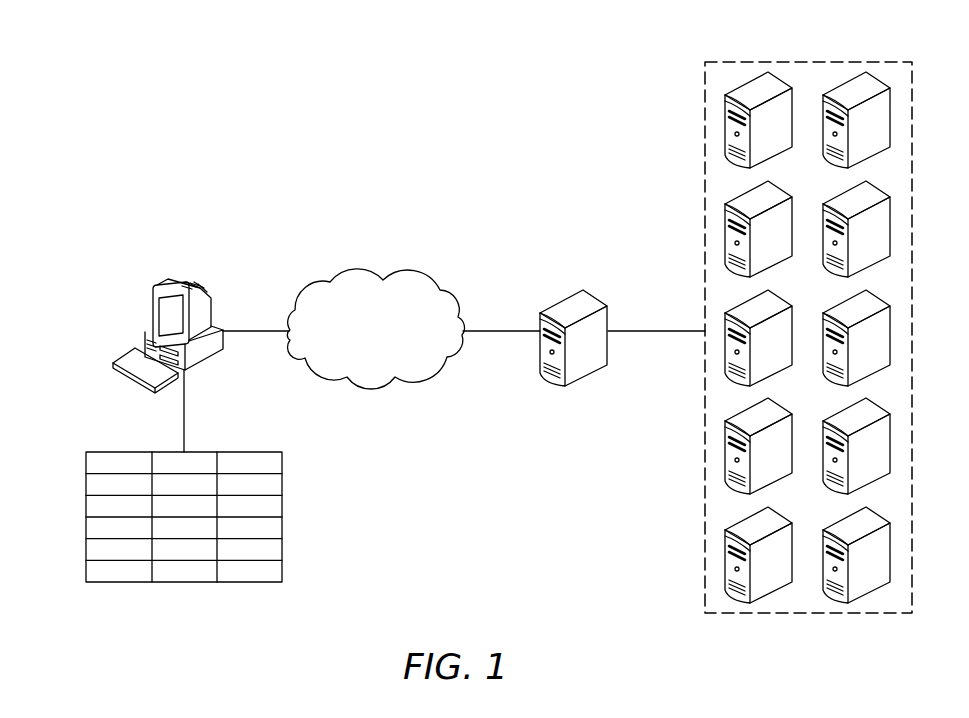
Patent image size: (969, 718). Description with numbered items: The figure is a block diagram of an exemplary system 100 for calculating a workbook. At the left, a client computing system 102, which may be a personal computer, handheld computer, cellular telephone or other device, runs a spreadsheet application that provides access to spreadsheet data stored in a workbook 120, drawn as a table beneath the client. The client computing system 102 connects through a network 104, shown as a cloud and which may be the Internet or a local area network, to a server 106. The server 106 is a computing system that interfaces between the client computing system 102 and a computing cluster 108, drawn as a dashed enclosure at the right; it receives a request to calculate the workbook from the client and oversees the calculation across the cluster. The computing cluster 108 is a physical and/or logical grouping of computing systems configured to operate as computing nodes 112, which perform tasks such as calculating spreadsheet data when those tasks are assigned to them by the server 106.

The system 100 is at (60, 92).
The client computing system 102 is at (153, 303).
The network 104 is at (332, 280).
The server 106 is at (543, 308).
The computing cluster 108 is at (737, 61).
The computing nodes 112 is at (725, 126).
The workbook 120 is at (130, 450).